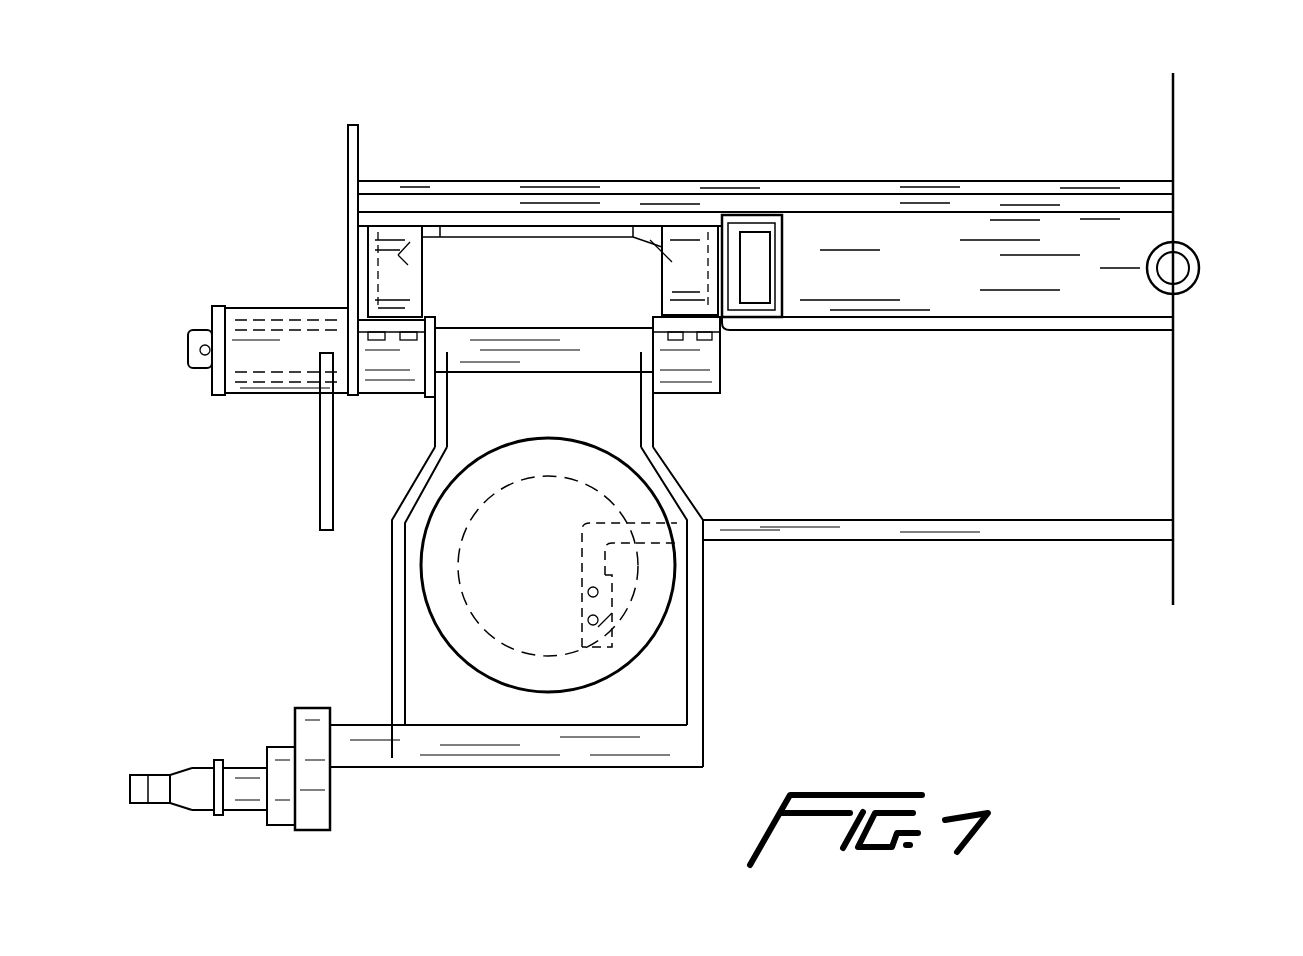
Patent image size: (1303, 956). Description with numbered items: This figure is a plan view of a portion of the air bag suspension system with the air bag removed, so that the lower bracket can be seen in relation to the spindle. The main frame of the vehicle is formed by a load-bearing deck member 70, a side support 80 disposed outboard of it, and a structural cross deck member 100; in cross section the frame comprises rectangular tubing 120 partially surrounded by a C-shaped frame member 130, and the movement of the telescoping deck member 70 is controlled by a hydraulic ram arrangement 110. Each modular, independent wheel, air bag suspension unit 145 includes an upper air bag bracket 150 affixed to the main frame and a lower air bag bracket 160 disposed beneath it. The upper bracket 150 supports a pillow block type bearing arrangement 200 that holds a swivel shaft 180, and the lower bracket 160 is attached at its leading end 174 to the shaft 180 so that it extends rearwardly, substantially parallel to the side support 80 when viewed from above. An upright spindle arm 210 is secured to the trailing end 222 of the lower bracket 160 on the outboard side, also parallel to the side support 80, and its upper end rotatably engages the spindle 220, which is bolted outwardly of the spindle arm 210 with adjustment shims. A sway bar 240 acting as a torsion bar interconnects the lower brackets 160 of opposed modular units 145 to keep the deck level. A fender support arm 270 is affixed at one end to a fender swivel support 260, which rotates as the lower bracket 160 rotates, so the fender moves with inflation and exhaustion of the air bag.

The deck member 70 is at (983, 180).
The side support 80 is at (360, 140).
The deck member 100 is at (1018, 203).
The hydraulic ram arrangement 110 is at (1185, 270).
The tubing 120 is at (763, 283).
The C-shaped frame member 130 is at (757, 215).
The modular, independent wheel, air bag suspension system 145 is at (735, 605).
The upper air bag bracket 150 is at (405, 222).
The lower air bag bracket 160 is at (390, 632).
The leading end 174 is at (432, 400).
The shaft 180 is at (203, 330).
The pillow block type bearing arrangement 200 is at (690, 395).
The spindle arm 210 is at (330, 800).
The spindle 220 is at (232, 770).
The trailing end 222 is at (420, 707).
The sway bar 240 is at (775, 518).
The fender swivel support 260 is at (285, 308).
The fender support arm 270 is at (318, 473).